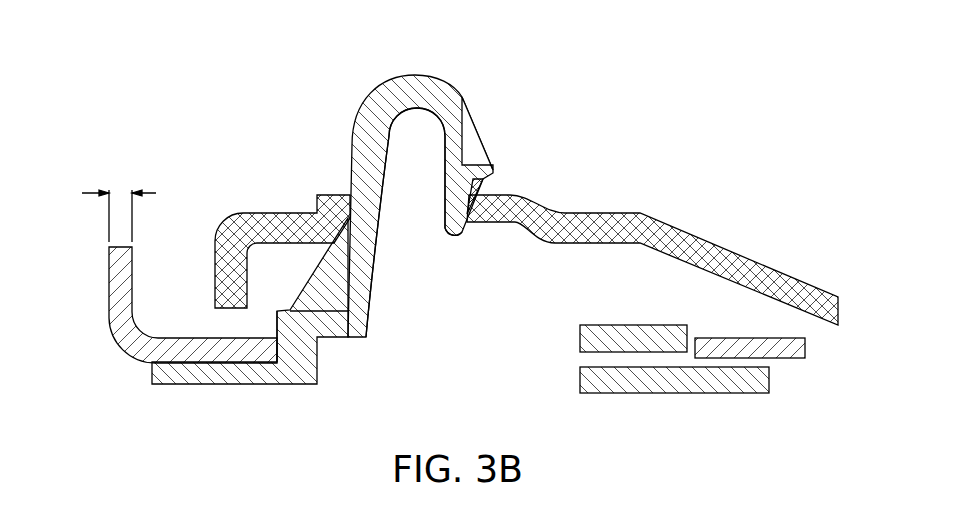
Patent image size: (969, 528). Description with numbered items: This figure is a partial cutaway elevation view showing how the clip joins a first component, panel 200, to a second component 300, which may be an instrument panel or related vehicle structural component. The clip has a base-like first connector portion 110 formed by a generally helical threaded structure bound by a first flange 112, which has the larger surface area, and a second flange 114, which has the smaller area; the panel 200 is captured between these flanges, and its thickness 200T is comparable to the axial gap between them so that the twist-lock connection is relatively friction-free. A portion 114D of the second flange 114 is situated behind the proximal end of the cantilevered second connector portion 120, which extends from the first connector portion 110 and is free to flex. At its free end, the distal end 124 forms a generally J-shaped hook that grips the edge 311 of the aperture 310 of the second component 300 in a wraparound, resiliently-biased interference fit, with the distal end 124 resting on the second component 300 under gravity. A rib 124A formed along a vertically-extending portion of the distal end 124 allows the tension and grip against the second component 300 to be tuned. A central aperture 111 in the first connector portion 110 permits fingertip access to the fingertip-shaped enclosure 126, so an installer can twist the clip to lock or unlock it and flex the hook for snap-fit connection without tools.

The first connector portion 110 is at (318, 360).
The second connector portion 120 is at (417, 74).
The distal end 124 is at (493, 167).
The rib 124A is at (490, 183).
The fingertip-shaped enclosure 126 is at (428, 150).
The aperture 310 is at (438, 195).
The edge 311 is at (456, 228).
The second component 300 is at (698, 233).
The panel 200 is at (108, 270).
The thickness 200T is at (150, 209).
The portion of the flange 114D is at (275, 325).
The second flange 114 is at (580, 336).
The first flange 112 is at (580, 378).
The aperture 111 is at (465, 347).